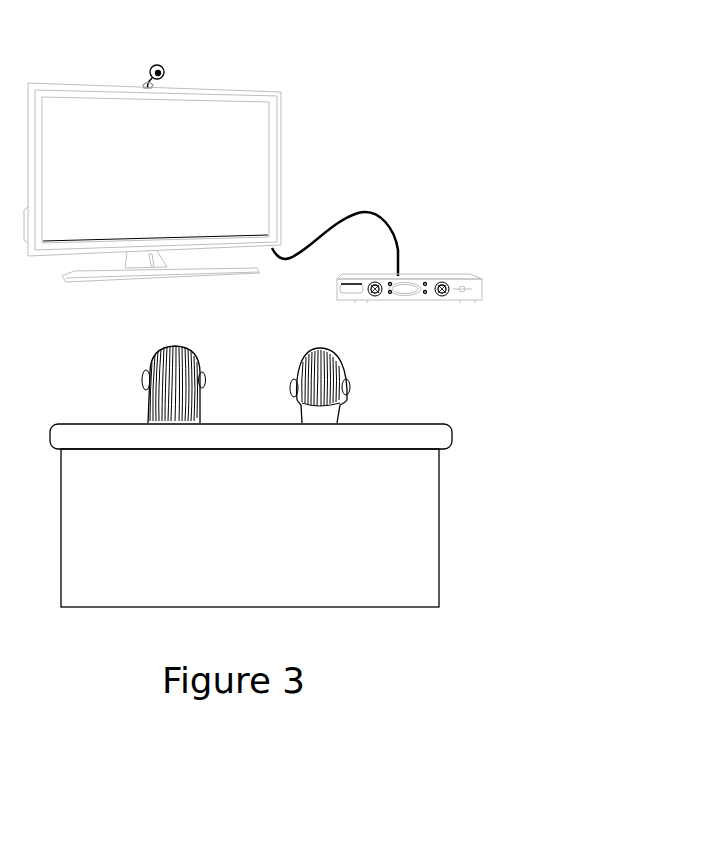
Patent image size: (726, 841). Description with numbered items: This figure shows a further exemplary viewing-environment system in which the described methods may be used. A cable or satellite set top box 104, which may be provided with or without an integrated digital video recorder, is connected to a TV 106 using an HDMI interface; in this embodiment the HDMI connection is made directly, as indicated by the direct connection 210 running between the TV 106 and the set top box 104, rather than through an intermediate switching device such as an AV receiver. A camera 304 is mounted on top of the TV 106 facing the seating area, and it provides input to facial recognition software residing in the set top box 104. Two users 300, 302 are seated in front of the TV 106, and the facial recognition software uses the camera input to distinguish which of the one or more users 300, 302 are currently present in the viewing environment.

The set top box 104 is at (452, 273).
The TV 106 is at (238, 88).
The direct HDMI connection 210 is at (367, 212).
The user 300 is at (152, 360).
The user 302 is at (298, 362).
The camera 304 is at (143, 70).